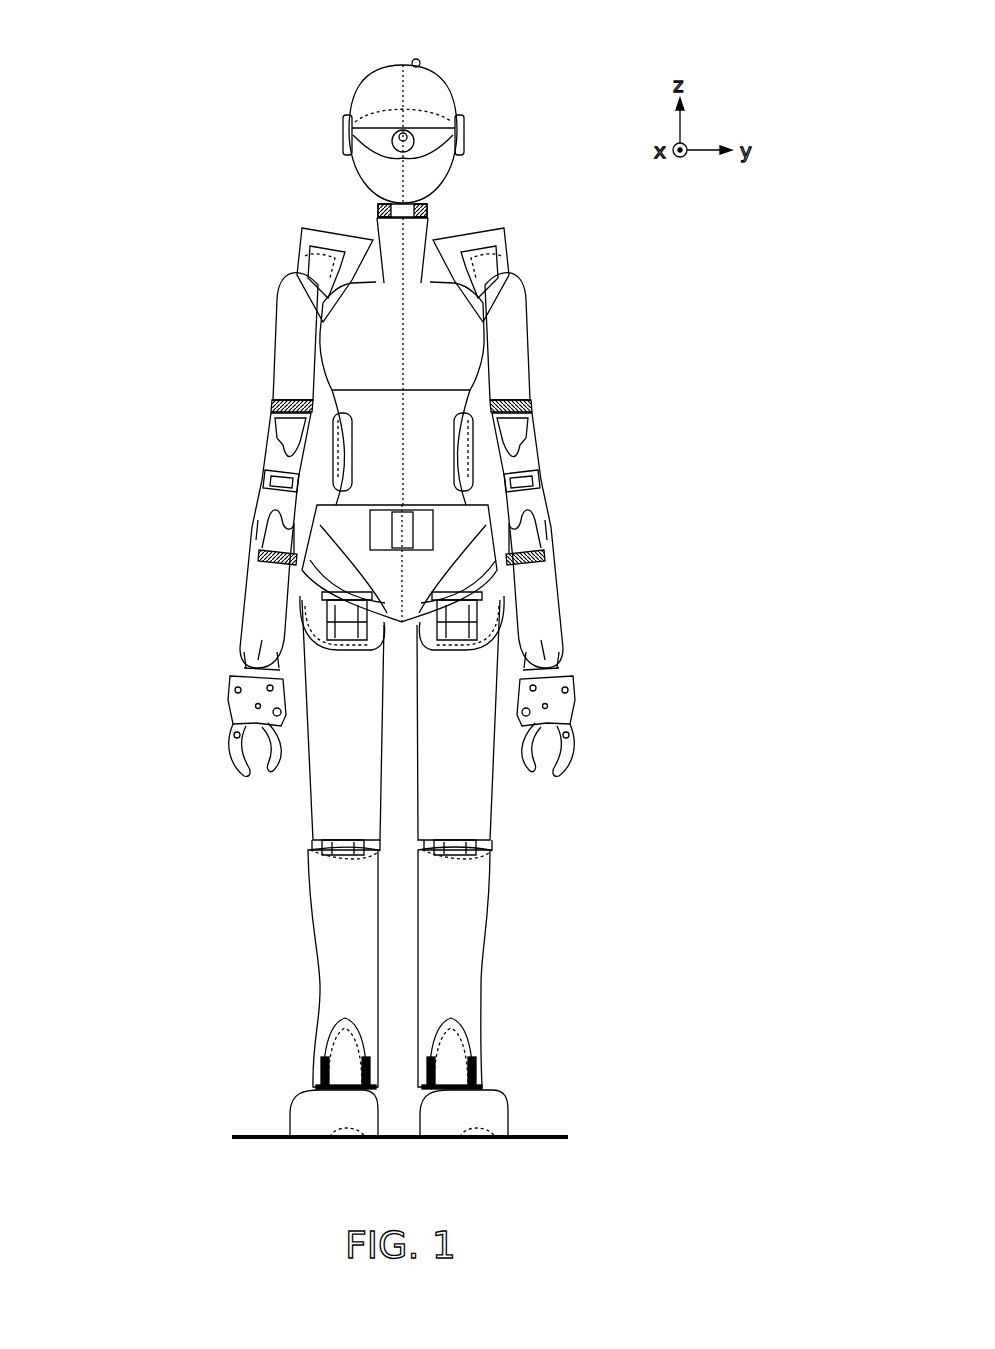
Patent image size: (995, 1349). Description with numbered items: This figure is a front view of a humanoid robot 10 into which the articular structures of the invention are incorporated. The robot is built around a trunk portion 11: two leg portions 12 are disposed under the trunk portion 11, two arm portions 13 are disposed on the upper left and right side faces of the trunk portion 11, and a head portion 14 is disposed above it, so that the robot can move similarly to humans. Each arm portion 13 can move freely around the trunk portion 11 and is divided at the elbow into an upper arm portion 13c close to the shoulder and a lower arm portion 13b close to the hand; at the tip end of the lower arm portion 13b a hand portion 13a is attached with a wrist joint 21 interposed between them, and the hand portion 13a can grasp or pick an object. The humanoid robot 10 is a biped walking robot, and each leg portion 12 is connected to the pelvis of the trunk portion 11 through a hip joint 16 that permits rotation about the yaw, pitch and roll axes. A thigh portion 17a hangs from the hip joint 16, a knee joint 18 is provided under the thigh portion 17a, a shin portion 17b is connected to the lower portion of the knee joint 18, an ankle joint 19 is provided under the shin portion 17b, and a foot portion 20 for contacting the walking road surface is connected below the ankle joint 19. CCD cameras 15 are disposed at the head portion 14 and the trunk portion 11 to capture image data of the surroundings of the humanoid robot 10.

The humanoid robot 10 is at (146, 150).
The trunk portion 11 is at (474, 470).
The leg portions 12 is at (402, 864).
The arm portions 13 is at (401, 525).
The hand portion 13a is at (225, 730).
The lower arm portion 13b is at (559, 608).
The upper arm portion 13c is at (530, 323).
The head portion 14 is at (455, 88).
The CCD cameras 15 is at (420, 150).
The hip joint 16 is at (497, 570).
The thigh portion 17a is at (492, 790).
The shin portion 17b is at (481, 972).
The knee joint 18 is at (486, 876).
The ankle joint 19 is at (478, 1044).
The foot portion 20 is at (507, 1118).
The wrist joint 21 is at (556, 680).